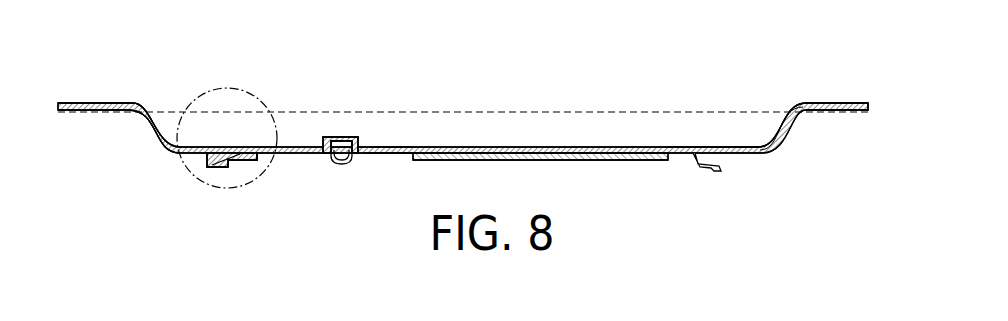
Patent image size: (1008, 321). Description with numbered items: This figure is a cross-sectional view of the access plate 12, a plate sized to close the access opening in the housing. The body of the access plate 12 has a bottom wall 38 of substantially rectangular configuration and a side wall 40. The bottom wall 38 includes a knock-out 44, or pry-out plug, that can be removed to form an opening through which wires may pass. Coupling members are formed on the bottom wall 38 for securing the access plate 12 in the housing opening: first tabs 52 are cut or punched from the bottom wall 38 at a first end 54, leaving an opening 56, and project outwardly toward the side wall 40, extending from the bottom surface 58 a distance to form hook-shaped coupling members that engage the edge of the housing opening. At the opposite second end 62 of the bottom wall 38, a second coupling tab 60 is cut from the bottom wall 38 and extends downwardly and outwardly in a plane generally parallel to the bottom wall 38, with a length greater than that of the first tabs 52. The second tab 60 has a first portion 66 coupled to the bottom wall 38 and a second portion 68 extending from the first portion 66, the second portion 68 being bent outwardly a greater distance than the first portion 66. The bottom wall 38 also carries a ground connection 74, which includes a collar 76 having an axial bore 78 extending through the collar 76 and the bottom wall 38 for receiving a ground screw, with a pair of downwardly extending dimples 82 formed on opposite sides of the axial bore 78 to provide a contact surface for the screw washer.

The access plate 12 is at (519, 94).
The bottom wall 38 is at (392, 147).
The side wall 40 is at (578, 130).
The knock-out 44 is at (620, 160).
The first tabs 52 is at (716, 171).
The first end 54 is at (748, 122).
The opening 56 is at (712, 148).
The bottom surface 58 is at (380, 154).
The second coupling tab 60 is at (218, 172).
The second end 62 is at (150, 142).
The first portion 66 is at (252, 164).
The second portion 68 is at (207, 162).
The ground connection 74 is at (314, 130).
The collar 76 is at (356, 137).
The axial bore 78 is at (344, 136).
The dimples 82 is at (342, 165).